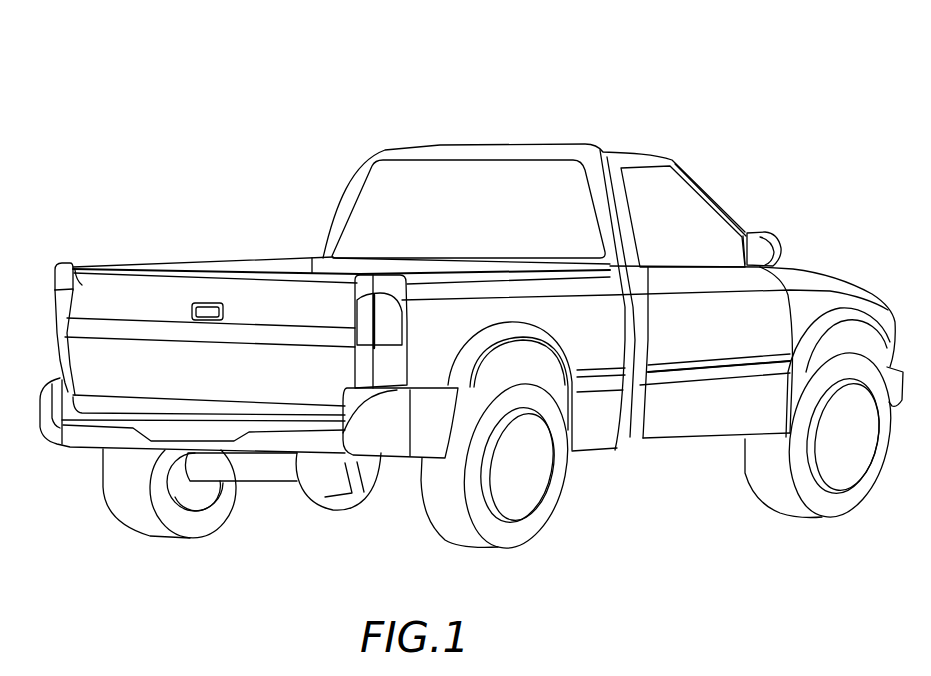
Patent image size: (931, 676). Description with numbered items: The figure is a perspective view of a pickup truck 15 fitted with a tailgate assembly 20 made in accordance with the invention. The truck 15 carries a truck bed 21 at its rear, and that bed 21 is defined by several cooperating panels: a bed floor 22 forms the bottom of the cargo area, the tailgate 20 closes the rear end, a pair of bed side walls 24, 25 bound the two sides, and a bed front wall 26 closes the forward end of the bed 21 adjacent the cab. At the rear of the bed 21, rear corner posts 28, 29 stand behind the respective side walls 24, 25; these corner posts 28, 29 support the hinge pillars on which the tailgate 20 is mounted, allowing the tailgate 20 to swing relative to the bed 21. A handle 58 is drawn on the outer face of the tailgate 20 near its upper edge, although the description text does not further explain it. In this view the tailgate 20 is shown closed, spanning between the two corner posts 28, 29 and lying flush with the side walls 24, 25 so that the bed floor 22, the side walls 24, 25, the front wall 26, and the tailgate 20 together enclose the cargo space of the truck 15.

The pickup truck 15 is at (546, 100).
The tailgate assembly 20 is at (72, 268).
The truck bed 21 is at (318, 240).
The bed floor 22 is at (200, 402).
The bed side wall 24 is at (272, 259).
The bed side wall 25 is at (584, 309).
The bed front wall 26 is at (425, 258).
The rear corner post 28 is at (58, 353).
The rear corner post 29 is at (362, 364).
The tailgate handle 58 is at (208, 309).